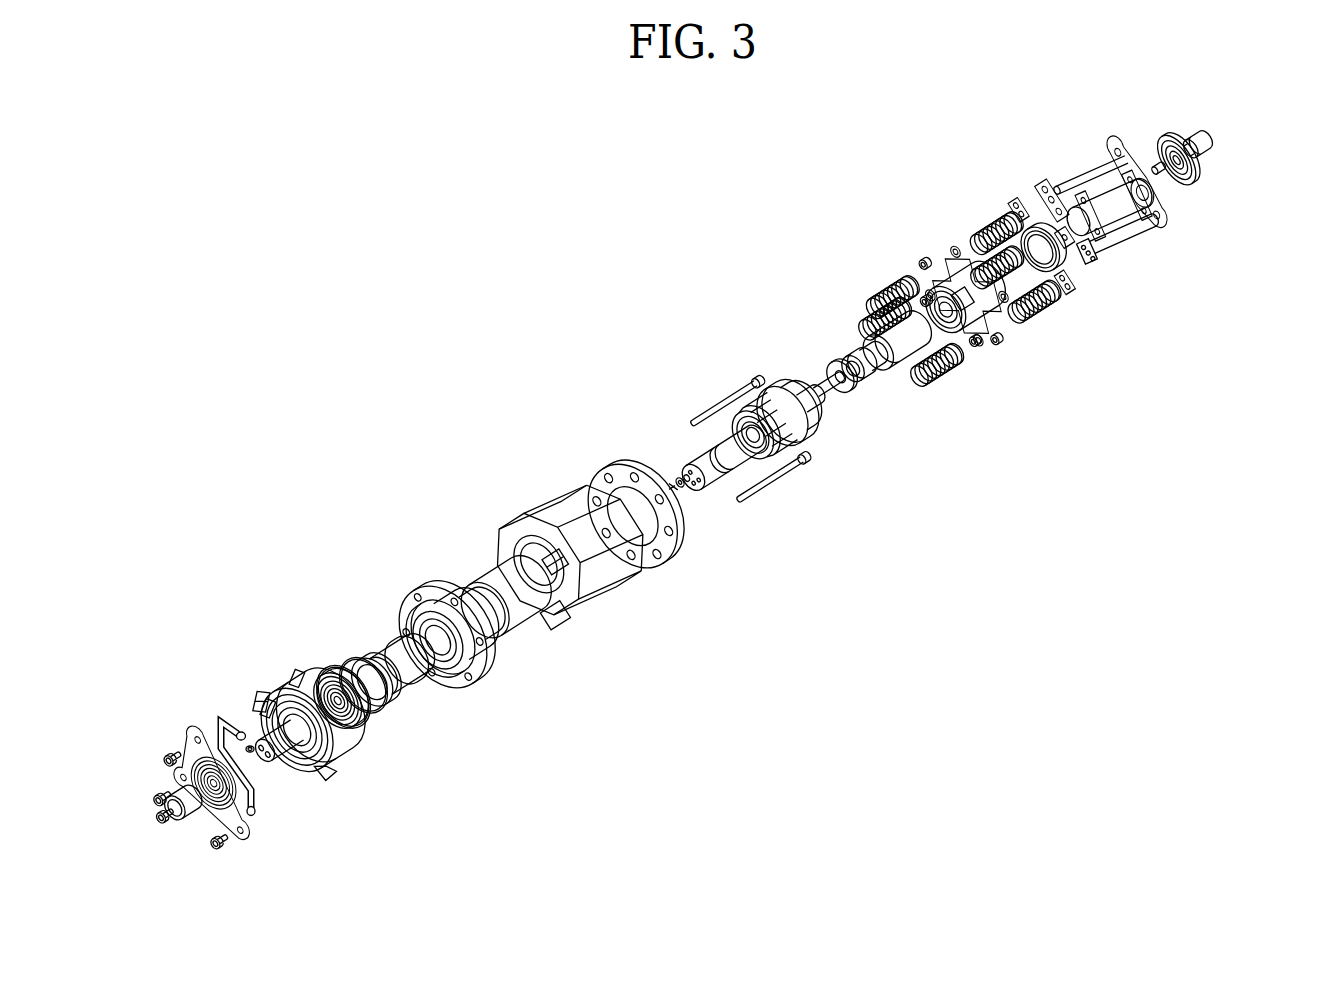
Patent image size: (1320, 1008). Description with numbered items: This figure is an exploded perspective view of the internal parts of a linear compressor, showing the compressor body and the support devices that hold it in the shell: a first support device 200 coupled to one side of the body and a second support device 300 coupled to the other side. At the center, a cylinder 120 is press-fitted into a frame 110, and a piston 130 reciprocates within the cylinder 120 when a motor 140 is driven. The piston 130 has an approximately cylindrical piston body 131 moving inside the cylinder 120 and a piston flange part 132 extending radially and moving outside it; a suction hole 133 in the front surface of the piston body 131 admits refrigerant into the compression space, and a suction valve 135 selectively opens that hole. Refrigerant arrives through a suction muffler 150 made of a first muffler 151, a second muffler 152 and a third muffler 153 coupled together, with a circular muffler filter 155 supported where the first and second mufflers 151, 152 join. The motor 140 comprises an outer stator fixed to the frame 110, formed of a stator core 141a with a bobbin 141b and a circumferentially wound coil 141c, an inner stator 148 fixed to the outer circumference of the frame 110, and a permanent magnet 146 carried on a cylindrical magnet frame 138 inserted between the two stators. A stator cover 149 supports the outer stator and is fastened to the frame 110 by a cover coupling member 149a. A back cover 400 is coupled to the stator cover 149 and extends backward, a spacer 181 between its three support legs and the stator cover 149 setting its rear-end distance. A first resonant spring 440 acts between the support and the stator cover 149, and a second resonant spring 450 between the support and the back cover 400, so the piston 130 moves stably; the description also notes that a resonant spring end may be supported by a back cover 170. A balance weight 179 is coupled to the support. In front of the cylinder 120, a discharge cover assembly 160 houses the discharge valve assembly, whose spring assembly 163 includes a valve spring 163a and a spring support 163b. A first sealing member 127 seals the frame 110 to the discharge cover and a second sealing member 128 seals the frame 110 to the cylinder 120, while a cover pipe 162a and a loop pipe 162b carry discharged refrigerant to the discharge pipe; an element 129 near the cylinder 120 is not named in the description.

The frame 110 is at (423, 587).
The cylinder 120 is at (383, 658).
The first sealing member 127 is at (345, 660).
The second sealing member 128 is at (385, 705).
The retaining ring 129 is at (428, 692).
The piston 130 is at (759, 443).
The piston body 131 is at (710, 457).
The piston flange part 132 is at (760, 447).
The suction hole 133 is at (700, 482).
The suction valve 135 is at (677, 477).
The magnet frame 138 is at (783, 380).
The motor 140 is at (596, 580).
The stator core 141a is at (622, 565).
The bobbin 141b is at (560, 568).
The coil 141c is at (612, 592).
The permanent magnet 146 is at (797, 453).
The inner stator 148 is at (498, 573).
The stator cover 149 is at (610, 457).
The cover coupling member 149a is at (727, 400).
The suction muffler 150 is at (865, 387).
The first muffler 151 is at (830, 387).
The second muffler 152 is at (857, 355).
The third muffler 153 is at (903, 363).
The muffler filter 155 is at (840, 367).
The discharge cover assembly 160 is at (290, 680).
The cover pipe 162a is at (260, 700).
The loop pipe 162b is at (221, 719).
The spring assembly 163 is at (355, 726).
The valve spring 163a is at (315, 665).
The spring support 163b is at (347, 740).
The back cover 170 is at (1117, 247).
The balance weight 179 is at (1030, 217).
The spacer 181 is at (1067, 240).
The first support device 200 is at (1207, 200).
The second support device 300 is at (202, 824).
The back cover 400 is at (963, 337).
The first resonant spring 440 is at (890, 287).
The second resonant spring 450 is at (990, 223).